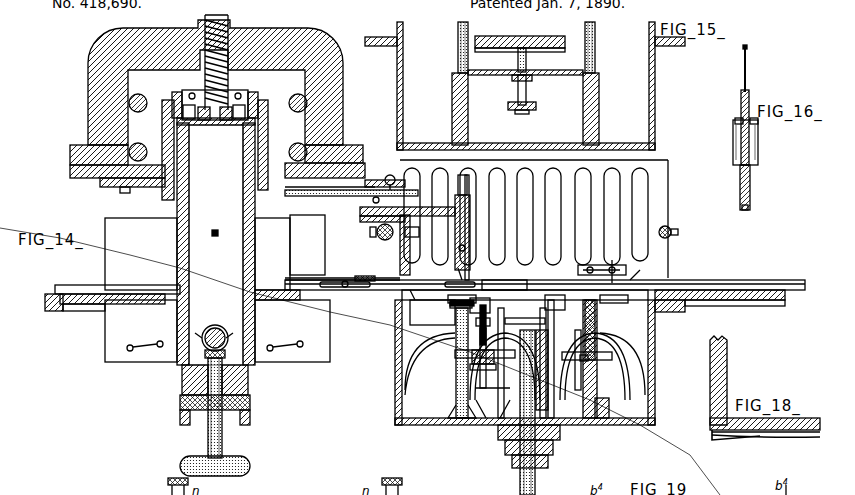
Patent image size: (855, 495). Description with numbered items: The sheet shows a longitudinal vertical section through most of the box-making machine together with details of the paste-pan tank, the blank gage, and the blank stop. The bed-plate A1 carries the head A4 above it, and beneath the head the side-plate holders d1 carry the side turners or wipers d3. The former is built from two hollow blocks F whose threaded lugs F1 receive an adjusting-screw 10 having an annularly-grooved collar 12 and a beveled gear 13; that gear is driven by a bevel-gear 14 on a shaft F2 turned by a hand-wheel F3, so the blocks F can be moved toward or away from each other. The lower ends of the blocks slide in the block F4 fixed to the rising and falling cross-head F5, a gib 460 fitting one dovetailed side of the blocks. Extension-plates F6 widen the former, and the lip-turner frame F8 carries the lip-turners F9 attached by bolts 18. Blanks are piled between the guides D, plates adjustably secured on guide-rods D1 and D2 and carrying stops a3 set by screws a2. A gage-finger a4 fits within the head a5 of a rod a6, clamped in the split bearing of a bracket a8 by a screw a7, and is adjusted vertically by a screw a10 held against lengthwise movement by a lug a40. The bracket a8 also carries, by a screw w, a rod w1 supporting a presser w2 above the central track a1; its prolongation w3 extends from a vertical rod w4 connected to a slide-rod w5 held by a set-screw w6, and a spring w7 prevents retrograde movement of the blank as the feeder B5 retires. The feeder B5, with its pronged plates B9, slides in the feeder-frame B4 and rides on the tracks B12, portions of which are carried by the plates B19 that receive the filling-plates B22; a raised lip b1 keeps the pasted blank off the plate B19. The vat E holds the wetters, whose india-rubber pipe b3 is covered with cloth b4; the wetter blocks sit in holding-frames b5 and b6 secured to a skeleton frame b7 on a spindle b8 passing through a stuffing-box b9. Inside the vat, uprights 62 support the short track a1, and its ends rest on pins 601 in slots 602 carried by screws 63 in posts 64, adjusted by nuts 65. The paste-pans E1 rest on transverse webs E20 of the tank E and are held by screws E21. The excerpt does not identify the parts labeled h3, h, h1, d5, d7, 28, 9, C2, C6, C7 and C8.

In FIG. 14, the housing h3 is at (105, 52).
In FIG. 14, the spring h is at (226, 120).
In FIG. 14, the spring seat blocks h1 is at (204, 121).
In FIG. 14, the head A4 is at (70, 158).
In FIG. 14, the bed-plate A1 is at (50, 311).
In FIG. 14, the side turners or wipers d3 is at (182, 93).
In FIG. 14, the cap side walls d7 is at (251, 92).
In FIG. 14, the outer wall d5 is at (266, 100).
In FIG. 14, the side-plate holders d1 is at (162, 122).
In FIG. 14, the hollow blocks F is at (216, 241).
In FIG. 14, the threaded lugs F1 is at (243, 240).
In FIG. 14, the shaft F2 is at (208, 428).
In FIG. 14, the hand-wheel F3 is at (240, 458).
In FIG. 14, the block F4 is at (182, 390).
In FIG. 14, the cross-head F5 is at (250, 403).
In FIG. 14, the extension-plates F6 is at (177, 238).
In FIG. 14, the lip-turner frame F8 is at (270, 362).
In FIG. 14, the lip-turners F9 is at (268, 330).
In FIG. 14, the pin 28 is at (206, 229).
In FIG. 14, the lower left chamber 9 is at (136, 331).
In FIG. 14, the adjusting-screw 10 is at (196, 328).
In FIG. 14, the annularly-grooved collar 12 is at (215, 328).
In FIG. 14, the beveled gear 13 is at (233, 328).
In FIG. 14, the bevel-gear 14 is at (206, 351).
In FIG. 14, the bolts 18 is at (215, 341).
In FIG. 14, the gib 460 is at (182, 375).
In FIG. 14, the plates B19 is at (58, 287).
In FIG. 14, the filling-plates B22 is at (125, 287).
In FIG. 14, the feeder B5 is at (805, 283).
In FIG. 14, the feeder-frame B4 is at (785, 292).
In FIG. 14, the plates B9 is at (644, 268).
In FIG. 14, the tracks B12 is at (504, 285).
In FIG. 14, the screw w is at (417, 232).
In FIG. 14, the rod w1 is at (402, 258).
In FIG. 14, the presser w2 is at (342, 272).
In FIG. 14, the prolongation w3 is at (282, 276).
In FIG. 18, the prolongation w3 is at (800, 437).
In FIG. 14, the vertical rod w4 is at (307, 245).
In FIG. 18, the vertical rod w4 is at (727, 370).
In FIG. 14, the slide-rod w5 is at (351, 198).
In FIG. 14, the set-screw w6 is at (392, 178).
In FIG. 16, the set-screw w6 is at (743, 47).
In FIG. 16, the spring w7 is at (746, 70).
In FIG. 18, the spring w7 is at (728, 444).
In FIG. 14, the central track a1 is at (525, 278).
In FIG. 14, the screws a2 is at (588, 266).
In FIG. 14, the stops a3 is at (602, 258).
In FIG. 16, the gage-finger a4 is at (750, 195).
In FIG. 14, the head a5 is at (455, 230).
In FIG. 16, the head a5 is at (758, 132).
In FIG. 14, the rod a6 is at (362, 212).
In FIG. 14, the screw a7 is at (464, 268).
In FIG. 14, the bracket a8 is at (373, 201).
In FIG. 14, the screw a10 is at (458, 182).
In FIG. 16, the lug a40 is at (735, 121).
In FIG. 14, the guides D is at (668, 180).
In FIG. 14, the guide-rod D1 is at (668, 226).
In FIG. 14, the guide-rods D2 is at (382, 238).
In FIG. 14, the vat or pan E is at (395, 378).
In FIG. 15, the vat or pan E is at (525, 86).
In FIG. 15, the paste-pan E1 is at (488, 75).
In FIG. 15, the transverse webs E20 is at (452, 115).
In FIG. 15, the screws E21 is at (460, 40).
In FIG. 15, the cross bar C2 is at (520, 36).
In FIG. 15, the stem C6 is at (527, 60).
In FIG. 15, the stem C7 is at (527, 93).
In FIG. 15, the nut C8 is at (524, 115).
In FIG. 14, the screw studs or pins 601 is at (476, 273).
In FIG. 14, the slots 602 is at (445, 285).
In FIG. 14, the raised lip b1 is at (547, 359).
In FIG. 14, the india-rubber pipe b3 is at (485, 316).
In FIG. 14, the absorbent material b4 is at (432, 320).
In FIG. 14, the holding-frame b5 is at (493, 360).
In FIG. 14, the holding-frame b6 is at (425, 332).
In FIG. 14, the skeleton frame b7 is at (480, 388).
In FIG. 14, the spindle b8 is at (520, 476).
In FIG. 14, the stuffing-box b9 is at (510, 446).
In FIG. 14, the uprights 62 is at (508, 328).
In FIG. 14, the screws 63 is at (532, 320).
In FIG. 14, the posts 64 is at (456, 392).
In FIG. 14, the nuts 65 is at (531, 301).